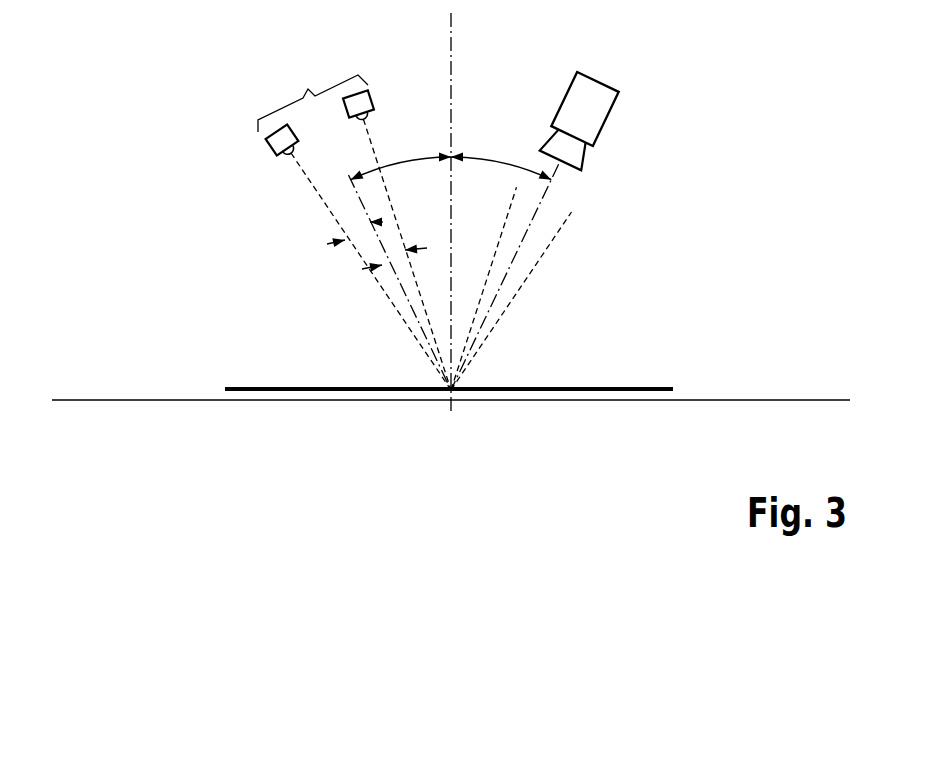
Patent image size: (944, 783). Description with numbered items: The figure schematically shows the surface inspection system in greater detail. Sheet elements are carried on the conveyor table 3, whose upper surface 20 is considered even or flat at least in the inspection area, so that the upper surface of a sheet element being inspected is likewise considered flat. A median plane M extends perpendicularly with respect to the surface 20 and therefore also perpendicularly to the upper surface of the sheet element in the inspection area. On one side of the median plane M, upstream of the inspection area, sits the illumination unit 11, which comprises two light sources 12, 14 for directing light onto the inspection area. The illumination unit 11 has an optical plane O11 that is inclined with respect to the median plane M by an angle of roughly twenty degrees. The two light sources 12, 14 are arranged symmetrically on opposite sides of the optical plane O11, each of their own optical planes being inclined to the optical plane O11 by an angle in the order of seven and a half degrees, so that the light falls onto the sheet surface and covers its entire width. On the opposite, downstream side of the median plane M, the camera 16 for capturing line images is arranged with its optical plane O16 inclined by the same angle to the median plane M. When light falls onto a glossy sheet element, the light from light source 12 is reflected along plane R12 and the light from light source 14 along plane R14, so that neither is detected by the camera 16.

The conveyor table 3 is at (345, 440).
The illumination unit 11 is at (322, 202).
The light source 12 is at (263, 137).
The light source 14 is at (378, 97).
The camera 16 is at (600, 77).
The upper surface 20 is at (742, 399).
The median plane M is at (450, 30).
The optical plane of the illumination unit O11 is at (416, 304).
The optical plane of the camera O16 is at (540, 205).
The reflection plane R12 is at (547, 248).
The reflection plane R14 is at (488, 283).